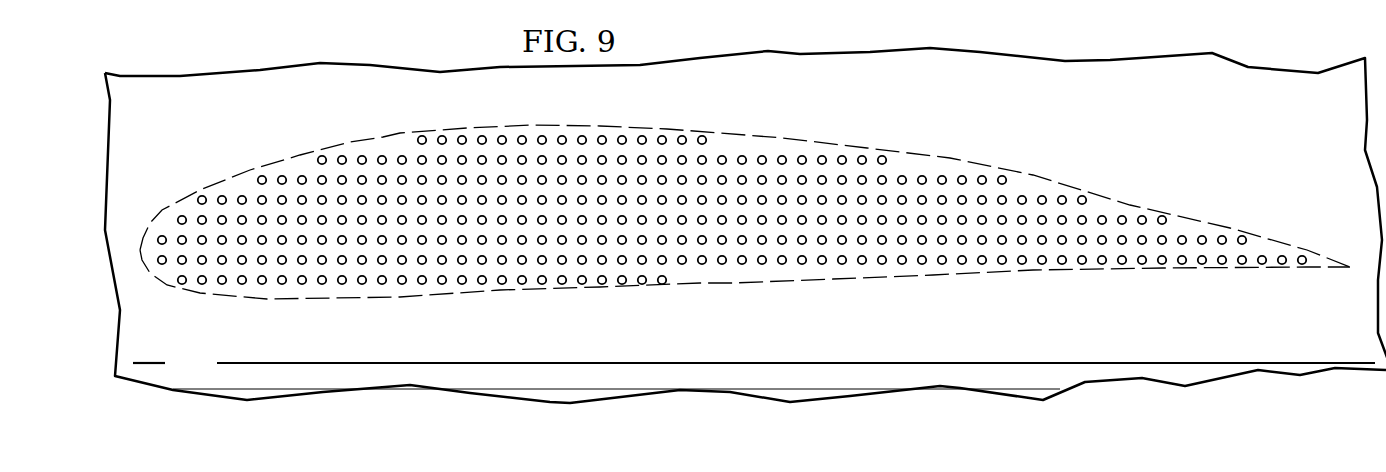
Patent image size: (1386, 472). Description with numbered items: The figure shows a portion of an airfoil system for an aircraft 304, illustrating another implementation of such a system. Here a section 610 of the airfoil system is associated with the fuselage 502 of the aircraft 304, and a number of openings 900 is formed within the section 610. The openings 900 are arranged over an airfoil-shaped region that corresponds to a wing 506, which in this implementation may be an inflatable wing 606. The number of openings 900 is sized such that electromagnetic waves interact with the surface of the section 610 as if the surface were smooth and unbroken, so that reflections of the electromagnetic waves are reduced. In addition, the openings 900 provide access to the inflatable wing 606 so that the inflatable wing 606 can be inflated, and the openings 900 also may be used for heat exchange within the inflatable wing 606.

The aircraft 304 is at (1252, 67).
The fuselage 502 is at (418, 86).
The wing 506 is at (1044, 181).
The inflatable wing 606 is at (1058, 262).
The section 610 is at (745, 219).
The number of openings 900 is at (728, 152).